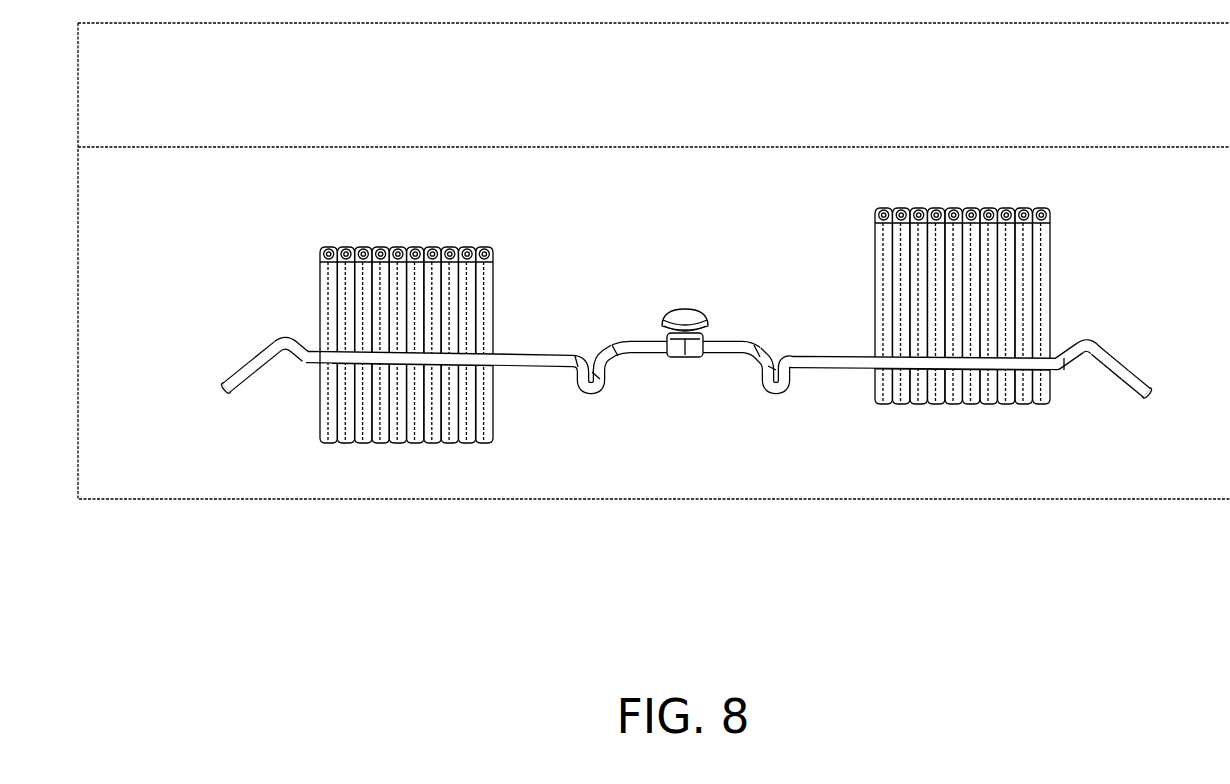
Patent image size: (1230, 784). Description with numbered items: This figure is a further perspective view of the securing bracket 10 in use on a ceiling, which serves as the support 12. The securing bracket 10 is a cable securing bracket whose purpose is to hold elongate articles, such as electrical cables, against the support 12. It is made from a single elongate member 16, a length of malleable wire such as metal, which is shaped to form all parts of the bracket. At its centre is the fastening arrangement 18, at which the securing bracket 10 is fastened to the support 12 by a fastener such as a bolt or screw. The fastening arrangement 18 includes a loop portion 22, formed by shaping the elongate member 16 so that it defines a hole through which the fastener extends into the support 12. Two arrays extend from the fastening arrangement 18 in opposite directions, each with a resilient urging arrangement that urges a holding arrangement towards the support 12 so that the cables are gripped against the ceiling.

The securing bracket 10 is at (722, 445).
The support 12 is at (100, 477).
The elongate member 16 is at (830, 374).
The fastening arrangement 18 is at (692, 271).
The loop portion 22 is at (699, 308).